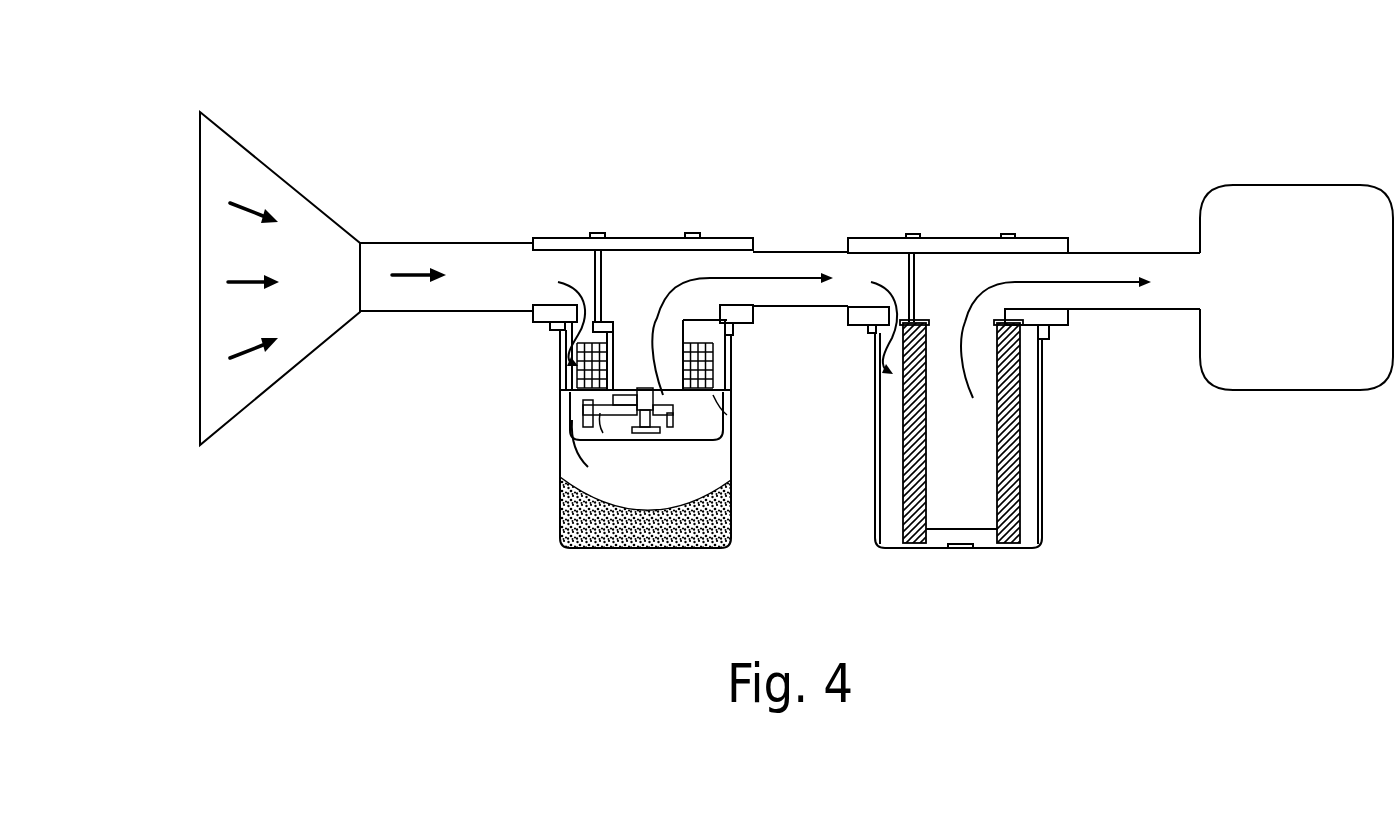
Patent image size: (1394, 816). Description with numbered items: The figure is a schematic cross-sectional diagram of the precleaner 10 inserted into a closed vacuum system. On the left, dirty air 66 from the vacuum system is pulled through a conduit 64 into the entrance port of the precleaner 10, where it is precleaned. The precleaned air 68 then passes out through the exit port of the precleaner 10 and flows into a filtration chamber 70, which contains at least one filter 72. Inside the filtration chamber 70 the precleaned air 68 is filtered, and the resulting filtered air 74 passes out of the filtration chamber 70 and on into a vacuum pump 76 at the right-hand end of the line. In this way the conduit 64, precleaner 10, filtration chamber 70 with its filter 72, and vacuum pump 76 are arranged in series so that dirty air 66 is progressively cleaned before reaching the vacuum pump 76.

The conduit 64 is at (380, 253).
The dirty air 66 is at (407, 267).
The precleaner 10 is at (573, 407).
The precleaned air 68 is at (734, 275).
The filtration chamber 70 is at (890, 478).
The filter 72 is at (924, 522).
The filtered air 74 is at (1082, 298).
The vacuum pump 76 is at (1322, 363).